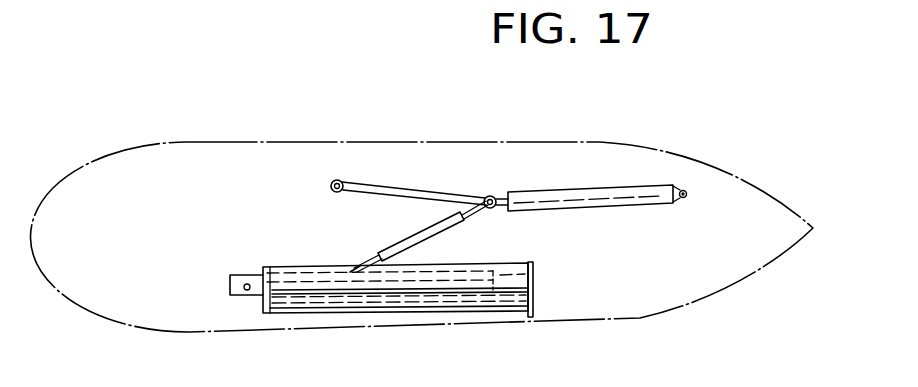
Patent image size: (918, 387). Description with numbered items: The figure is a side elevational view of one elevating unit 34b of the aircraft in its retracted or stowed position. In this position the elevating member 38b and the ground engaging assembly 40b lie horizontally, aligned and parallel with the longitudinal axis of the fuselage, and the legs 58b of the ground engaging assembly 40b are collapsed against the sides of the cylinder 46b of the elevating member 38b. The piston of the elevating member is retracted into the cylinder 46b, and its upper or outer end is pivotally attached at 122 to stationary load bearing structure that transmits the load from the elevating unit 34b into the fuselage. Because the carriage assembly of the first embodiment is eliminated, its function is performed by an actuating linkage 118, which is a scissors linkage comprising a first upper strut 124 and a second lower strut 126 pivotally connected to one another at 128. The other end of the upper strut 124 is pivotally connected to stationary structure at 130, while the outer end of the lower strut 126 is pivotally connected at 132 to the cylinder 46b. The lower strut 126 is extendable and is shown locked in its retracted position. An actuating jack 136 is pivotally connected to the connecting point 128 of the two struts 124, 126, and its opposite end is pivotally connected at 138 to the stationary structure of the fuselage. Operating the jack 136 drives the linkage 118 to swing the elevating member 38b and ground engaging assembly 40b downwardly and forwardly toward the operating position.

The elevating unit 34b is at (452, 170).
The actuating linkage 118 is at (529, 176).
The pivotal attachment of the piston 122 is at (245, 284).
The first upper strut 124 is at (405, 188).
The second lower strut 126 is at (426, 232).
The pivotal connection 128 is at (491, 195).
The pivotal connection to stationary structure 130 is at (329, 184).
The pivotal connection to cylinder 132 is at (355, 270).
The actuating jack 136 is at (597, 192).
The pivotal connection of jack 138 is at (686, 197).
The elevating member 38b is at (287, 292).
The ground engaging assembly 40b is at (534, 275).
The cylinder 46b is at (480, 288).
The legs 58b is at (508, 266).